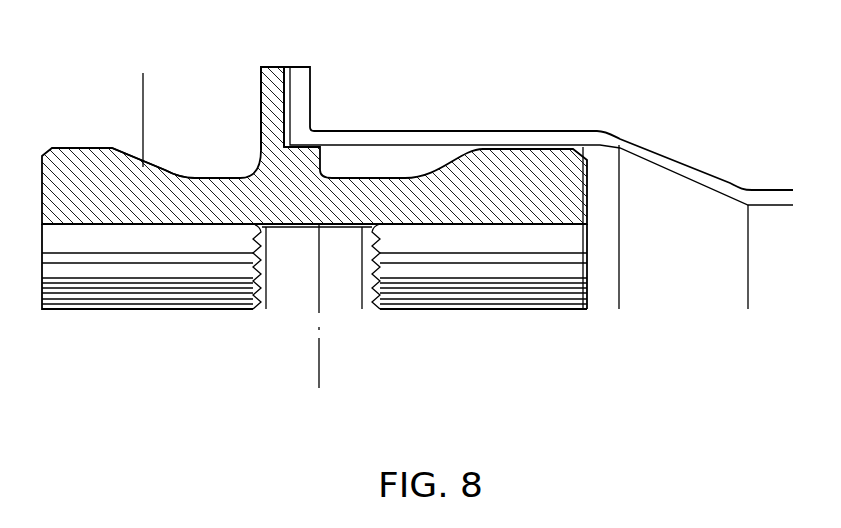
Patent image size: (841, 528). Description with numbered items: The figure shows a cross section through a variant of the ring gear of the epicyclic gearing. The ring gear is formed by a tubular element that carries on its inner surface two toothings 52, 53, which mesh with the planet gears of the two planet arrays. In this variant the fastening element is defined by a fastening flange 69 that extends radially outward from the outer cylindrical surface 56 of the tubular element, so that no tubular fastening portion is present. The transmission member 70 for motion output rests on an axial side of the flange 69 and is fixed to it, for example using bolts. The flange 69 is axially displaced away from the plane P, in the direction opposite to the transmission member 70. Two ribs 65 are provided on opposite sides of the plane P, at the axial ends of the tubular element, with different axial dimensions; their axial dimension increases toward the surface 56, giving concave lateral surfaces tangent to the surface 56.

The toothing 52 is at (506, 300).
The toothing 53 is at (140, 310).
The outer cylindrical surface 56 is at (211, 168).
The rib 65 is at (82, 148).
The fastening flange 69 is at (260, 84).
The transmission member 70 is at (528, 126).
The plane P is at (321, 375).